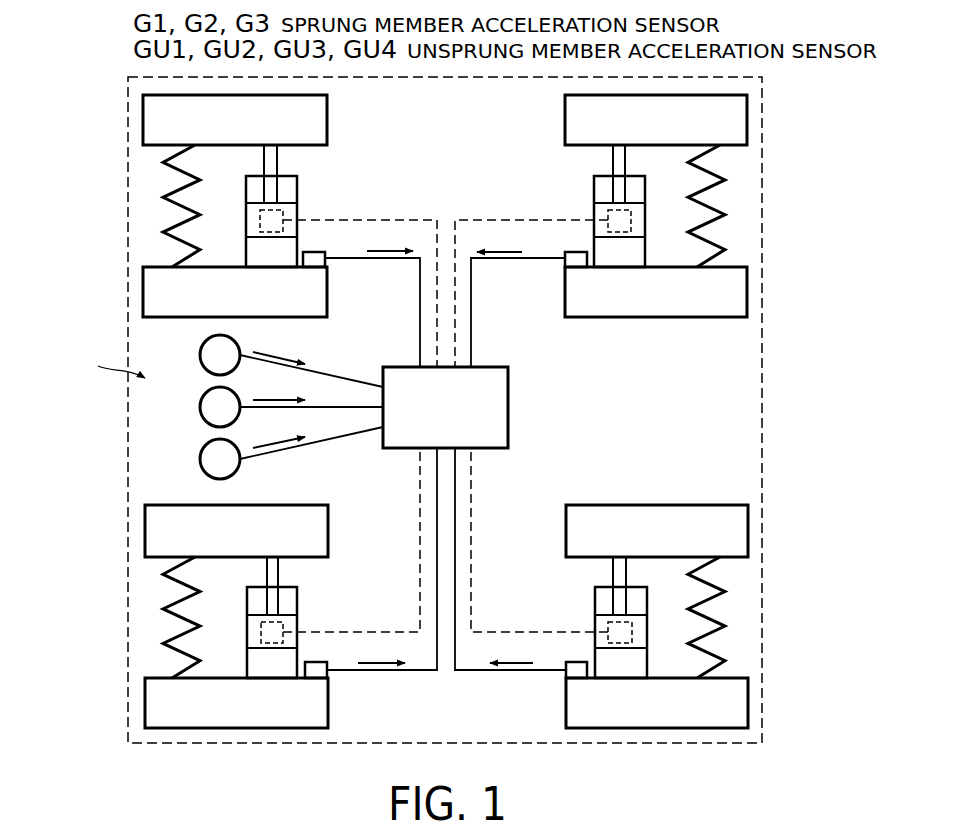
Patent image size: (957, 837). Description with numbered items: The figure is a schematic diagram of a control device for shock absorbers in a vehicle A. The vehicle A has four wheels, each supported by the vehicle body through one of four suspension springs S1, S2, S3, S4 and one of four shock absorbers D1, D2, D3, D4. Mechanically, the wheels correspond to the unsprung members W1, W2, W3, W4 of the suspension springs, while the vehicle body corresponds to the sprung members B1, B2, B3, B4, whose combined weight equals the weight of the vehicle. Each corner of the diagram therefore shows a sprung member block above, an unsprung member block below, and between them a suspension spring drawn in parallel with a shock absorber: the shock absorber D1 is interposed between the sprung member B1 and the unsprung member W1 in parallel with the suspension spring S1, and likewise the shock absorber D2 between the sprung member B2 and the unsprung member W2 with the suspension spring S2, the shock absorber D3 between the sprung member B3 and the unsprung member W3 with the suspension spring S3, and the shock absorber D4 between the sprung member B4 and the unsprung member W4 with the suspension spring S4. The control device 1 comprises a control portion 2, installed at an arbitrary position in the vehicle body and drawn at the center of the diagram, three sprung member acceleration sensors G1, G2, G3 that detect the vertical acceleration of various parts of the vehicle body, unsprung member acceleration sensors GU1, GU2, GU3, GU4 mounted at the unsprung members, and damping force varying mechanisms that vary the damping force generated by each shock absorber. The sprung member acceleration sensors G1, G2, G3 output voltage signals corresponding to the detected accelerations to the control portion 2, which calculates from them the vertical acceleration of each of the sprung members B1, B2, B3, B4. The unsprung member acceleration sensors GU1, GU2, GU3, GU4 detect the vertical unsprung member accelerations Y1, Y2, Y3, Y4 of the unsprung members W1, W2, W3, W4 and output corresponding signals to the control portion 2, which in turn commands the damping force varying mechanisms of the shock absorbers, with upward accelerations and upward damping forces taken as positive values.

The control device 1 is at (113, 362).
The control portion 2 is at (508, 405).
The vehicle A is at (126, 432).
The sprung member B1 is at (327, 98).
The sprung member B2 is at (565, 97).
The sprung member B3 is at (328, 508).
The sprung member B4 is at (566, 508).
The unsprung member W1 is at (143, 290).
The unsprung member W2 is at (747, 289).
The unsprung member W3 is at (145, 705).
The unsprung member W4 is at (748, 704).
The suspension spring S1 is at (163, 231).
The suspension spring S2 is at (725, 240).
The suspension spring S3 is at (163, 642).
The suspension spring S4 is at (725, 652).
The shock absorber D1 is at (237, 222).
The shock absorber D2 is at (655, 215).
The shock absorber D3 is at (237, 648).
The shock absorber D4 is at (655, 627).
The sprung member acceleration sensor G1 is at (200, 355).
The sprung member acceleration sensor G2 is at (200, 407).
The sprung member acceleration sensor G3 is at (200, 459).
The unsprung member acceleration sensor GU1 is at (322, 252).
The unsprung member acceleration sensor GU2 is at (568, 252).
The unsprung member acceleration sensor GU3 is at (322, 678).
The unsprung member acceleration sensor GU4 is at (566, 676).
The unsprung member acceleration Y1 is at (389, 237).
The unsprung member acceleration Y2 is at (499, 236).
The unsprung member acceleration Y3 is at (381, 650).
The unsprung member acceleration Y4 is at (511, 650).